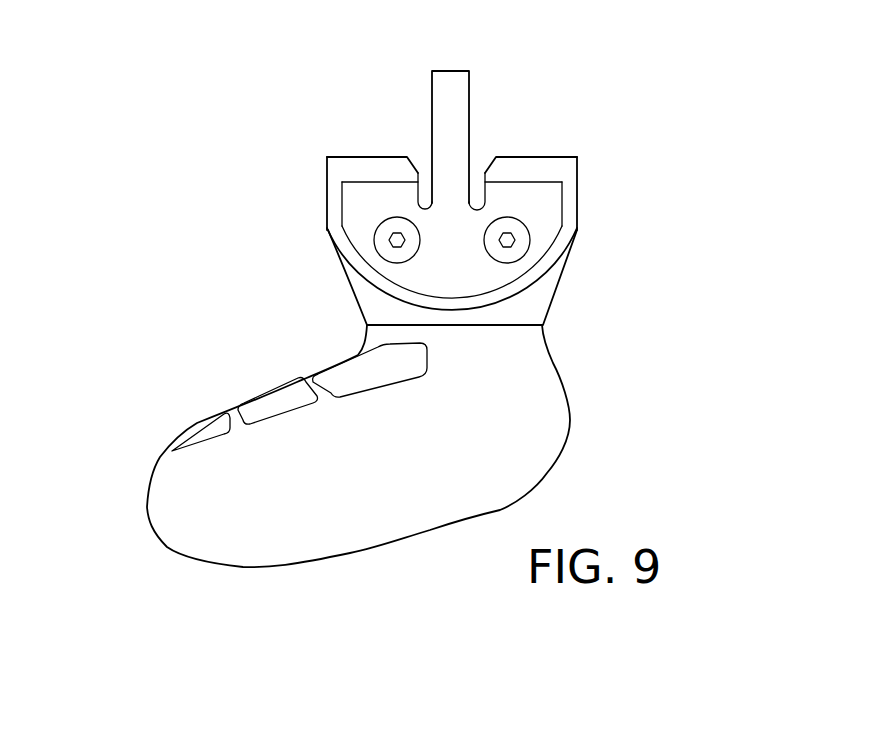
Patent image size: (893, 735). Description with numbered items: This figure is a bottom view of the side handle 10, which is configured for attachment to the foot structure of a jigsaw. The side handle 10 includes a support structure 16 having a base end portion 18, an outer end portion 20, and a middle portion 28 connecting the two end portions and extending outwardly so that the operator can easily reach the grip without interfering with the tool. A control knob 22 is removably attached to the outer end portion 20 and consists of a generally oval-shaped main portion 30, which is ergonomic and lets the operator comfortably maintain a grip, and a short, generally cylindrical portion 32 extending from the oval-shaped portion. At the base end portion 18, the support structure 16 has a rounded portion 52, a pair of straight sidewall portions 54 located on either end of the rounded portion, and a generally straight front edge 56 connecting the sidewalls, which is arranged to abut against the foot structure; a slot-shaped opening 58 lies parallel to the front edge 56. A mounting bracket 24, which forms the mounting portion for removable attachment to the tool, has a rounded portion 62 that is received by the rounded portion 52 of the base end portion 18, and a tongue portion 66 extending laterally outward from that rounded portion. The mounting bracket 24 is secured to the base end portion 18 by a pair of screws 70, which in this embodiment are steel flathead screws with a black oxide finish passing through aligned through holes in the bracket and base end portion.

The side handle 10 is at (170, 219).
The support structure 16 is at (565, 314).
The base end portion 18 is at (330, 261).
The outer end portion 20 is at (372, 313).
The control knob 22 is at (120, 544).
The mounting bracket 24 is at (412, 107).
The middle portion 28 is at (352, 297).
The oval-shaped main portion 30 is at (300, 518).
The cylindrical portion 32 is at (513, 345).
The rounded portion 52 is at (550, 258).
The straight sidewall portions 54 is at (337, 200).
The straight front edge 56 is at (362, 172).
The slot-shaped opening 58 is at (479, 190).
The rounded portion 62 is at (493, 273).
The tongue portion 66 is at (452, 93).
The screws 70 is at (378, 233).